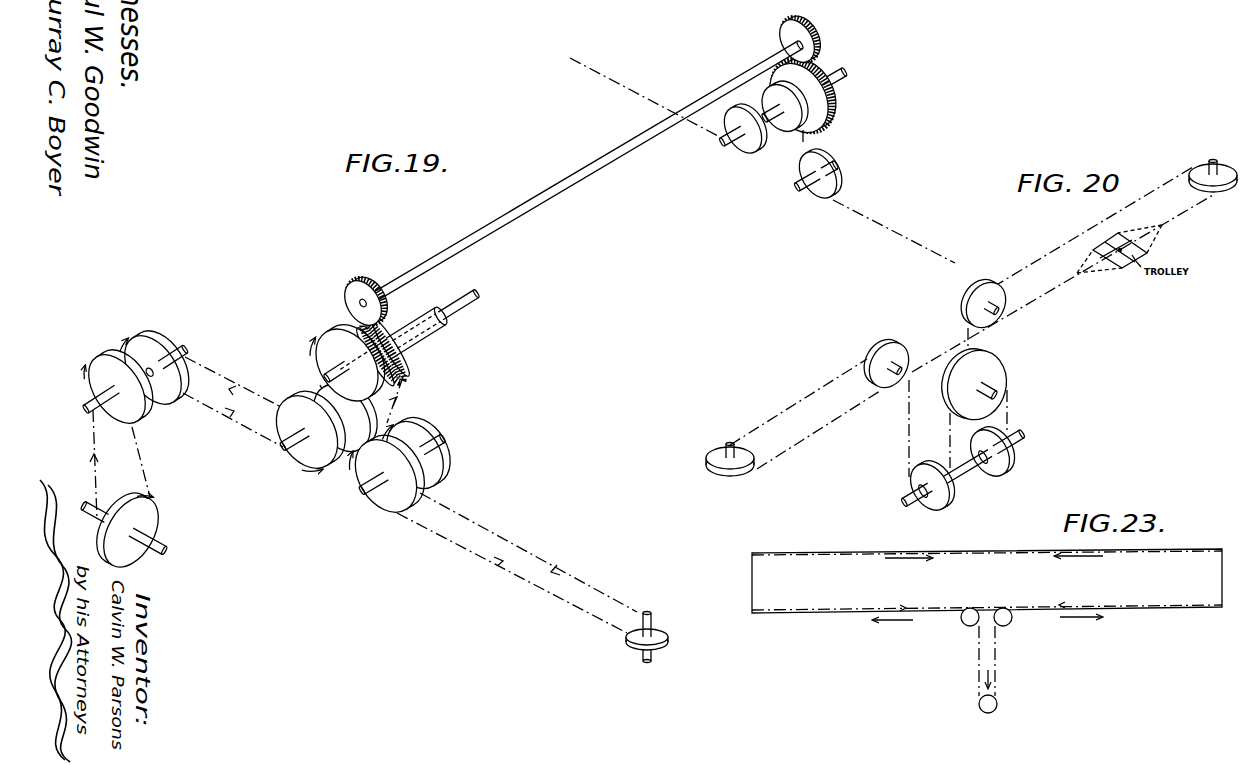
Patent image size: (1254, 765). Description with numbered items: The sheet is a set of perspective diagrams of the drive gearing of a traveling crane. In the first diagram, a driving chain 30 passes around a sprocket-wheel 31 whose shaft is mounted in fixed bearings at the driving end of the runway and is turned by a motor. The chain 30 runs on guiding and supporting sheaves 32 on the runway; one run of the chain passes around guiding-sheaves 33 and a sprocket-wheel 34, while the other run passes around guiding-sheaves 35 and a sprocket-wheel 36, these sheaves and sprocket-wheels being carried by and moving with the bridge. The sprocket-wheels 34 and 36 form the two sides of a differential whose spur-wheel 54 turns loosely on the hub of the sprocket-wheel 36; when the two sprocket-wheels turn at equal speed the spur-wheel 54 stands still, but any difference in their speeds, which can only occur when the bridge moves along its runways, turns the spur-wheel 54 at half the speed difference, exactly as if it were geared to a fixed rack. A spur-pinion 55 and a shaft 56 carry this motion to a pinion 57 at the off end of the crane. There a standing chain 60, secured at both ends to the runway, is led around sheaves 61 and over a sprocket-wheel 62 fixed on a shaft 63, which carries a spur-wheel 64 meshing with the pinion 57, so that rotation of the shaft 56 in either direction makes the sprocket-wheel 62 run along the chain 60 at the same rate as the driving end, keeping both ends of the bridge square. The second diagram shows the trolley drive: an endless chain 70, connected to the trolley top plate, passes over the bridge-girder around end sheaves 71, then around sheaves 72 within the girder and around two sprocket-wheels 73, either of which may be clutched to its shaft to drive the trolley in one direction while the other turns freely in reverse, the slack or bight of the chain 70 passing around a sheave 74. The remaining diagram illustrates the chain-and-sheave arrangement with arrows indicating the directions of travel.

In FIG. 19, the chain 30 is at (363, 495).
In FIG. 19, the sprocket-wheel 31 is at (124, 526).
In FIG. 19, the guiding and supporting sheaves 32 is at (374, 489).
In FIG. 19, the guiding-sheaves 33 is at (349, 452).
In FIG. 19, the sprocket-wheel 34 is at (352, 361).
In FIG. 19, the guiding-sheaves 35 is at (382, 434).
In FIG. 19, the sprocket-wheel 36 is at (408, 356).
In FIG. 19, the spur-wheel 54 is at (394, 374).
In FIG. 19, the spur-pinion 55 is at (366, 296).
In FIG. 19, the shaft 56 is at (597, 162).
In FIG. 19, the pinion 57 is at (806, 26).
In FIG. 19, the standing chain 60 is at (762, 160).
In FIG. 19, the sheaves 61 is at (821, 205).
In FIG. 19, the sprocket-wheel 62 is at (782, 132).
In FIG. 19, the shaft 63 is at (833, 77).
In FIG. 19, the spur-wheel 64 is at (830, 120).
In FIG. 20, the endless chain 70 is at (971, 322).
In FIG. 20, the end sheaves 71 is at (969, 312).
In FIG. 20, the sheaves 72 is at (934, 333).
In FIG. 20, the sprocket-wheels 73 is at (963, 468).
In FIG. 20, the sheave 74 is at (974, 384).